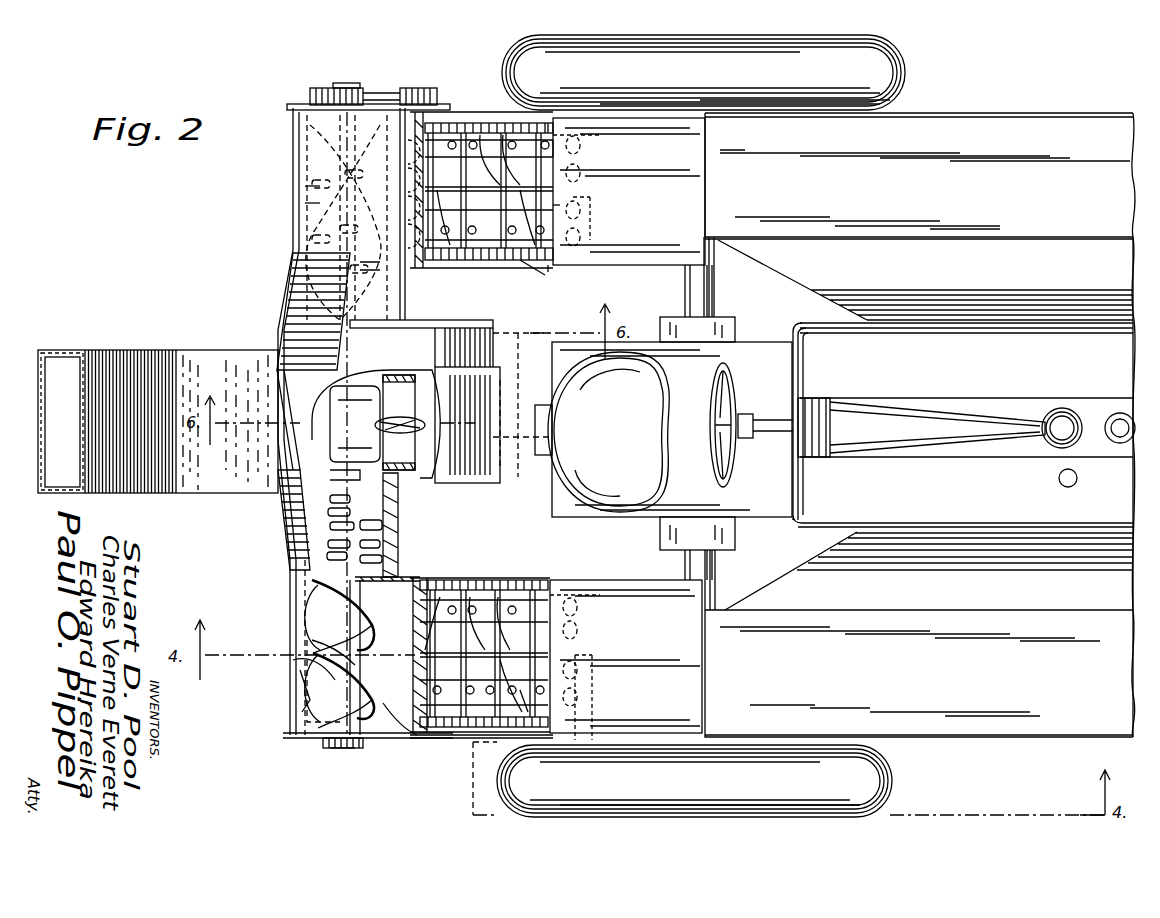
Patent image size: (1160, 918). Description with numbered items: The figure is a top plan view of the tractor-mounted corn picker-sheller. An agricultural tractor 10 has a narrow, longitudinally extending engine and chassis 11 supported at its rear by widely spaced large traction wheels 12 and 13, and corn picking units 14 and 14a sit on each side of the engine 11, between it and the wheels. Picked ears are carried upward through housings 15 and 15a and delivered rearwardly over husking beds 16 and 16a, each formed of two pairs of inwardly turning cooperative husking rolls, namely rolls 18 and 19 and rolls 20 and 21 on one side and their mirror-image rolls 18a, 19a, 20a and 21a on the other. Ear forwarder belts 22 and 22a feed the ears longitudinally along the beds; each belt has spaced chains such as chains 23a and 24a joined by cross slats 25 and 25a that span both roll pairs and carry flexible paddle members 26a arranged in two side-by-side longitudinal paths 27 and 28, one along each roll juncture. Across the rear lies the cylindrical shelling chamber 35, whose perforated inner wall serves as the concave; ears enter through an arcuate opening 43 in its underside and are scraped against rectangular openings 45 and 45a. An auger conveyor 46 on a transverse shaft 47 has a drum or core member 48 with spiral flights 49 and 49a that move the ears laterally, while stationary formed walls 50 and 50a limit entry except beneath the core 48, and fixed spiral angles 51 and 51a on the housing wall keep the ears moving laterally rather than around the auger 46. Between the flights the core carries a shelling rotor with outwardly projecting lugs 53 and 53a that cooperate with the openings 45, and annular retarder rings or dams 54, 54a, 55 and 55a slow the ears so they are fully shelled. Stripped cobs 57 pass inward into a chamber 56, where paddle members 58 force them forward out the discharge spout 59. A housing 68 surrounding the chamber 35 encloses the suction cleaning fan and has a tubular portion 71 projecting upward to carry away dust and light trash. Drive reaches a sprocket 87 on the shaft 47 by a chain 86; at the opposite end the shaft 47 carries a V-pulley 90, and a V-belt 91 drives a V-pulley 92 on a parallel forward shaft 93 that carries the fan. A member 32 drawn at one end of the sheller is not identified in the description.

The agricultural tractor 10 is at (793, 322).
The engine and chassis 11 is at (1035, 372).
The traction wheel 12 is at (892, 775).
The traction wheel 13 is at (905, 60).
The corn picking unit 14 is at (1047, 735).
The corn picking unit 14a is at (1045, 127).
The housing 15 is at (650, 582).
The housing 15a is at (662, 265).
The husking bed 16 is at (478, 615).
The husking bed 16a is at (492, 250).
The husking roll 18 is at (580, 702).
The husking roll 18a is at (583, 240).
The husking roll 19 is at (580, 660).
The husking roll 19a is at (583, 208).
The husking roll 20 is at (580, 623).
The husking roll 20a is at (583, 168).
The husking roll 21 is at (575, 600).
The husking roll 21a is at (584, 138).
The ear forwarder belt 22 is at (466, 738).
The ear forwarder belt 22a is at (538, 275).
The chain 23a is at (553, 267).
The chain 24a is at (550, 130).
The cross slat 25 is at (470, 585).
The cross slat 25a is at (480, 135).
The flexible paddle member 26a is at (556, 205).
The longitudinal path 27 is at (525, 705).
The longitudinal path 28 is at (500, 612).
The discharge chute 32 is at (100, 350).
The shelling chamber 35 is at (300, 672).
The arcuate opening 43 is at (395, 700).
The rectangular openings 45 is at (382, 559).
The rectangular openings 45a is at (305, 190).
The auger conveyor 46 is at (293, 662).
The shaft 47 is at (322, 740).
The drum or core member 48 is at (330, 621).
The spiral flight portion 49 is at (320, 643).
The spiral flight portion 49a is at (305, 205).
The stationary formed wall 50 is at (416, 580).
The stationary formed wall 50a is at (415, 268).
The spiral angle 51 is at (285, 724).
The spiral angle 51a is at (310, 152).
The lugs 53 is at (330, 512).
The lugs 53a is at (290, 302).
The retarder ring 54 is at (382, 524).
The retarder ring 54a is at (373, 274).
The retarder ring 55 is at (398, 485).
The retarder ring 55a is at (388, 369).
The chamber 56 is at (330, 448).
The stripped cobs 57 is at (400, 420).
The paddle members 58 is at (330, 474).
The discharge spout 59 is at (416, 468).
The housing 68 is at (440, 368).
The tubular portion 71 is at (283, 385).
The chain 86 is at (358, 748).
The sprocket 87 is at (341, 748).
The V-pulley 90 is at (318, 88).
The V-belt 91 is at (388, 93).
The V-pulley 92 is at (422, 88).
The shaft 93 is at (425, 266).